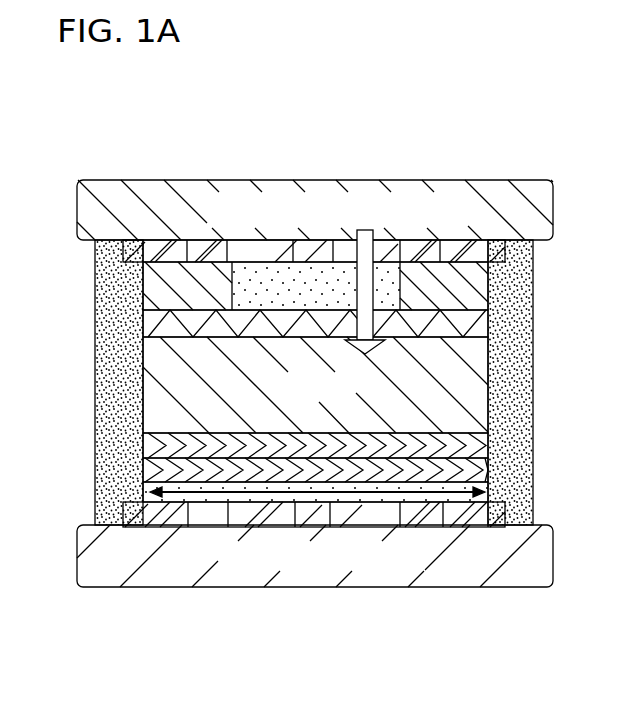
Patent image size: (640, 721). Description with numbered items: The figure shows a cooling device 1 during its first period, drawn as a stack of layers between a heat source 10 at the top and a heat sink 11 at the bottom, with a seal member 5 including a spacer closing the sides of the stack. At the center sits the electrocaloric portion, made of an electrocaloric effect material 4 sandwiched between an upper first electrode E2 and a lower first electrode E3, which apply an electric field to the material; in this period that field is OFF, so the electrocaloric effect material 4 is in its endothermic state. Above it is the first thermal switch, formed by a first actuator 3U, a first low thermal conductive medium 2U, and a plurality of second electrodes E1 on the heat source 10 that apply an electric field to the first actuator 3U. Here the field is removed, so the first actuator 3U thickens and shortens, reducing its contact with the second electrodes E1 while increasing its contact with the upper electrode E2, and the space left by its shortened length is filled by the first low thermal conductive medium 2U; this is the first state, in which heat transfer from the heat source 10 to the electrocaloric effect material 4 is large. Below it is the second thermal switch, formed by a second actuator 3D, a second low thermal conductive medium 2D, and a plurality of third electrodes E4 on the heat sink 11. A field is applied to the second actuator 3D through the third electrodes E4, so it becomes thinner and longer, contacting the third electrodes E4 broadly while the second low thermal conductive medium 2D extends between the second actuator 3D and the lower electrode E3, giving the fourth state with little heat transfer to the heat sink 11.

The cooling device 1 is at (540, 93).
The heat source 10 is at (540, 212).
The heat sink 11 is at (540, 560).
The seal member 5 is at (103, 383).
The first actuator 3U is at (201, 264).
The second actuator 3D is at (487, 503).
The first low thermal conductive medium 2U is at (167, 290).
The second low thermal conductive medium 2D is at (460, 472).
The electrocaloric effect material 4 is at (465, 387).
The second electrodes E1 is at (150, 255).
The first electrode (upper electrode) E2 is at (473, 323).
The first electrode (lower electrode) E3 is at (467, 443).
The third electrodes E4 is at (137, 518).